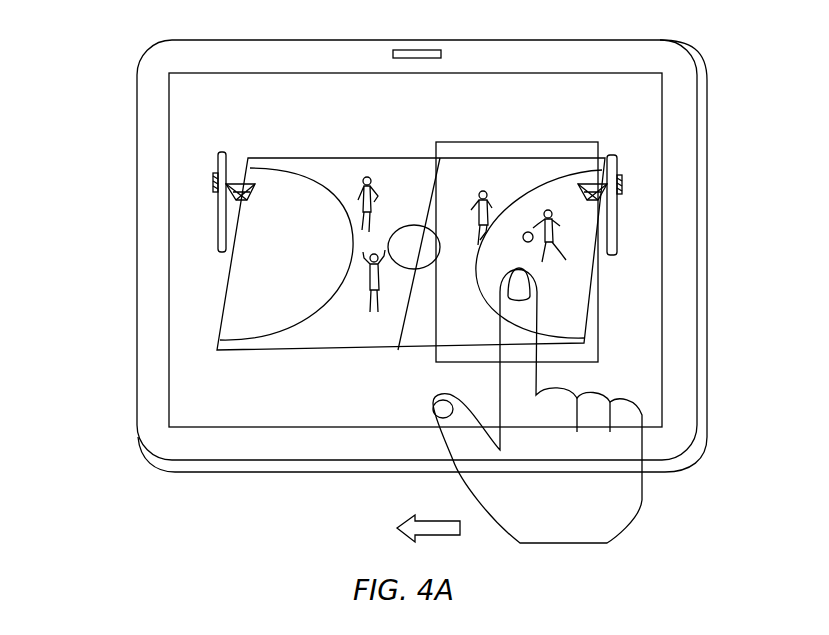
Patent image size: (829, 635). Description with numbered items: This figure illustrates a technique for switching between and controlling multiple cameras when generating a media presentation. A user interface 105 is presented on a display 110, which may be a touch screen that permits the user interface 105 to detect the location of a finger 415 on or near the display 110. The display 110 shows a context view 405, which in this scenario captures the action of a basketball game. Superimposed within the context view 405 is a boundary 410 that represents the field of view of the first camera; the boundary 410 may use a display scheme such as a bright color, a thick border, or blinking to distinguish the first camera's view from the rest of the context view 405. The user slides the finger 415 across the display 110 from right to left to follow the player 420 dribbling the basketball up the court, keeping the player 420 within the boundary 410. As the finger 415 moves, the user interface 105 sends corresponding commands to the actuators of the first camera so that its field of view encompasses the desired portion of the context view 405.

The user interface 105 is at (318, 40).
The display 110 is at (243, 73).
The context view 405 is at (236, 302).
The boundary 410 is at (512, 142).
The finger 415 is at (637, 503).
The player 420 is at (548, 211).